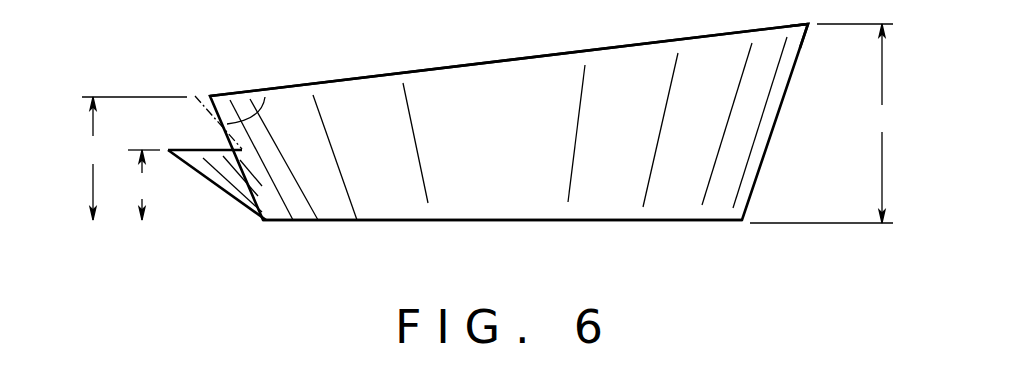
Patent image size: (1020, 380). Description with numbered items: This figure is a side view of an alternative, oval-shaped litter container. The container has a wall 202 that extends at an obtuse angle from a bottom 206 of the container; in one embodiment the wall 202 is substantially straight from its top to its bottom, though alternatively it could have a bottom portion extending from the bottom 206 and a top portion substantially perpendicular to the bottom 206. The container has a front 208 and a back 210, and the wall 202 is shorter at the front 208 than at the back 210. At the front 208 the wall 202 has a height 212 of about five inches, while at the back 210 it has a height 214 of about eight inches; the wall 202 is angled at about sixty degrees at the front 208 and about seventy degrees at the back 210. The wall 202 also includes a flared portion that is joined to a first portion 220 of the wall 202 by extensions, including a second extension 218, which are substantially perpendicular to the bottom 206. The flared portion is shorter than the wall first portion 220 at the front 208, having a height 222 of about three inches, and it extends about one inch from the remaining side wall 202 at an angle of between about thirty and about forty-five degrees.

The wall 202 is at (402, 110).
The bottom 206 is at (357, 222).
The front 208 is at (265, 97).
The back 210 is at (805, 41).
The height 212 is at (130, 158).
The height 214 is at (827, 123).
The second extension 218 is at (233, 185).
The first portion 220 is at (532, 55).
The height 222 is at (145, 185).